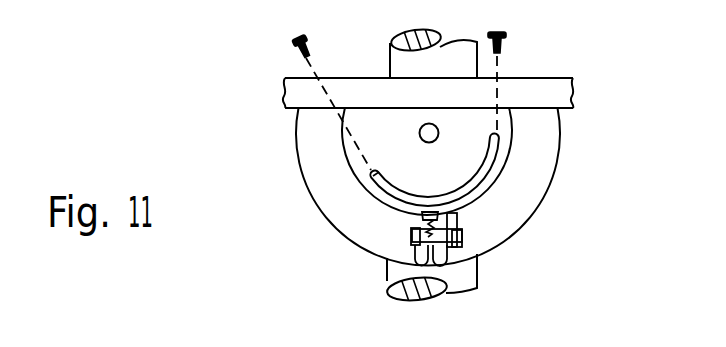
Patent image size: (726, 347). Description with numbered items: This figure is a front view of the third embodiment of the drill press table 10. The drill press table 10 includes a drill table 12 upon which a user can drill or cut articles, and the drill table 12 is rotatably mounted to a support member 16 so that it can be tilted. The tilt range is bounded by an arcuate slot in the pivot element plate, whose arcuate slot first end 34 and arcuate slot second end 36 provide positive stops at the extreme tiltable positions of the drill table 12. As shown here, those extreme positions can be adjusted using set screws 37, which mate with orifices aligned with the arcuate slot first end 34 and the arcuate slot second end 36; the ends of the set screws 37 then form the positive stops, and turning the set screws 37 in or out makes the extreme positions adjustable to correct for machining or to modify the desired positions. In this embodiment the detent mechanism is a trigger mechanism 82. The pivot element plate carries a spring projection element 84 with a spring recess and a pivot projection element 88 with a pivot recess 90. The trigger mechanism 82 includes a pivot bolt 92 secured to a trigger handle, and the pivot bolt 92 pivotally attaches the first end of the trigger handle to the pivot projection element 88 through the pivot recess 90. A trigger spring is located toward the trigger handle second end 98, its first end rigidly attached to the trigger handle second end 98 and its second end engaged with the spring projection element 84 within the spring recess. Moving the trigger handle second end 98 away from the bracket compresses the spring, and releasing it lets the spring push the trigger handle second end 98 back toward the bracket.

The drill press table 10 is at (243, 79).
The drill table 12 is at (575, 90).
The support member 16 is at (390, 62).
The arcuate slot first end 34 is at (500, 140).
The arcuate slot second end 36 is at (376, 176).
The set screws 37 is at (292, 44).
The trigger mechanism 82 is at (525, 181).
The spring projection element 84 is at (422, 214).
The pivot projection element 88 is at (458, 217).
The pivot recess 90 is at (458, 248).
The pivot bolt 92 is at (463, 238).
The trigger handle second end 98 is at (413, 259).